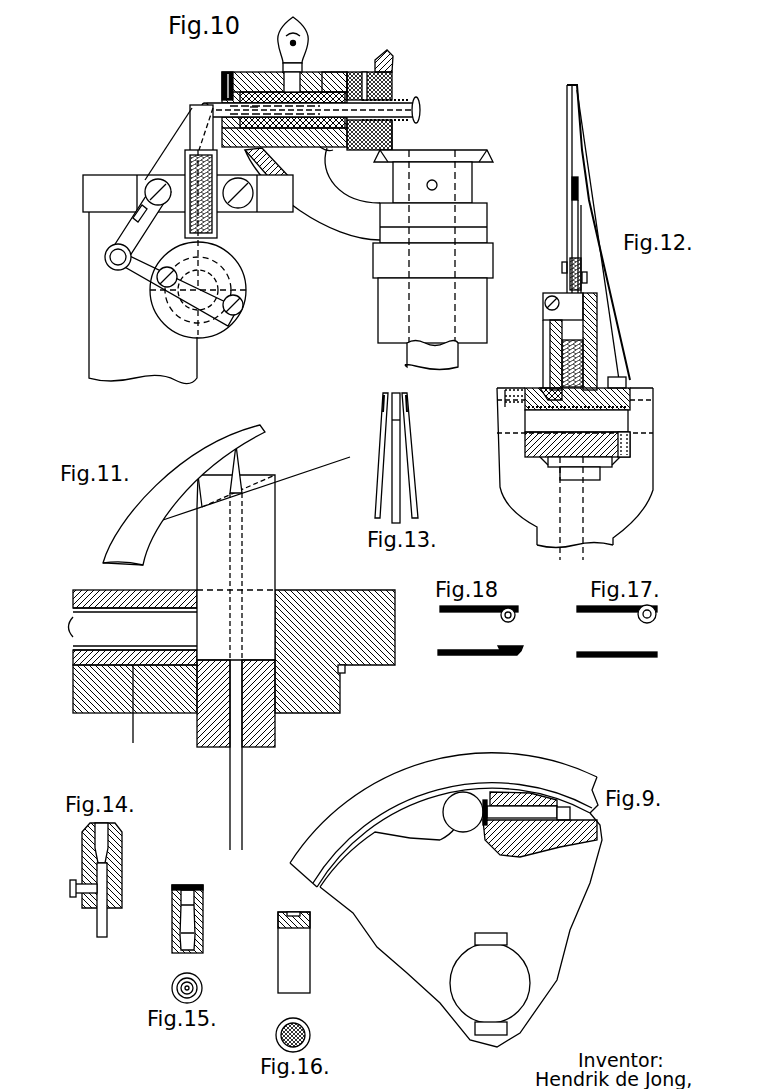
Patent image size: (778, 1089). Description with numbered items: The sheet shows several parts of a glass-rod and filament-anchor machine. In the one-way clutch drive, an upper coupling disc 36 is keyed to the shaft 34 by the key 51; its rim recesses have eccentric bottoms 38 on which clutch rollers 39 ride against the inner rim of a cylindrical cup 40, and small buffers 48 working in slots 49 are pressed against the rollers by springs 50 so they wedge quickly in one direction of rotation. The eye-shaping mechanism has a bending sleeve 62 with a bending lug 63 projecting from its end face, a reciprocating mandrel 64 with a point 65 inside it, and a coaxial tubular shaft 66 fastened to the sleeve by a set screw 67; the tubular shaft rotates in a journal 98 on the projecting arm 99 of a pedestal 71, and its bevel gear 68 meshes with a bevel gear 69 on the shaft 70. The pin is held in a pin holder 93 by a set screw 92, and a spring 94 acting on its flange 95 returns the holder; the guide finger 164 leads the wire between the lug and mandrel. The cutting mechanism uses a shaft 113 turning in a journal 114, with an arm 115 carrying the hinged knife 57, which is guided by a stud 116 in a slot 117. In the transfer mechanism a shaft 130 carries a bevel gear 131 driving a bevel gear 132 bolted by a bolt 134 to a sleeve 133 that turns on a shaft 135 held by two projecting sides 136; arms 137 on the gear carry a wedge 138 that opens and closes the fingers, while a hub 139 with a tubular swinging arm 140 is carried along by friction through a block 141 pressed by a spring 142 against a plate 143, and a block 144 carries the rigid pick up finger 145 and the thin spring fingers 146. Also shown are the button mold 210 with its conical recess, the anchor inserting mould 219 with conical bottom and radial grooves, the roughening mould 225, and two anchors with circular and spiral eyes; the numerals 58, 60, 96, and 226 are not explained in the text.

In FIG. 9, the shaft 34 is at (520, 995).
In FIG. 9, the upper coupling disc 36 is at (602, 845).
In FIG. 9, the eccentric bottoms 38 is at (427, 834).
In FIG. 9, the clutch rollers 39 is at (463, 822).
In FIG. 9, the cylindrical cup 40 is at (405, 808).
In FIG. 9, the buffers 48 is at (537, 818).
In FIG. 9, the slots 49 is at (568, 822).
In FIG. 9, the springs 50 is at (494, 855).
In FIG. 9, the key 51 is at (508, 939).
In FIG. 10, the knife 57 is at (189, 112).
In FIG. 10, the plate 58 is at (190, 135).
In FIG. 10, the screw 60 is at (242, 207).
In FIG. 10, the bending roll or sleeve 62 is at (250, 103).
In FIG. 11, the bending roll or sleeve 62 is at (270, 499).
In FIG. 10, the bending lug 63 is at (206, 103).
In FIG. 11, the bending lug 63 is at (250, 472).
In FIG. 10, the reciprocating pin or mandrel 64 is at (250, 108).
In FIG. 11, the reciprocating pin or mandrel 64 is at (243, 528).
In FIG. 11, the point 65 is at (245, 453).
In FIG. 10, the tubular shaft 66 is at (299, 84).
In FIG. 11, the tubular shaft 66 is at (301, 595).
In FIG. 10, the set screw 67 is at (229, 72).
In FIG. 11, the set screw 67 is at (158, 618).
In FIG. 10, the bevel gear 68 is at (392, 58).
In FIG. 10, the bevel gear 69 is at (480, 153).
In FIG. 10, the shaft 70 is at (458, 352).
In FIG. 10, the pedestal 71 is at (378, 305).
In FIG. 10, the set screw 92 is at (328, 148).
In FIG. 10, the pin holder 93 is at (396, 102).
In FIG. 10, the spring 94 is at (396, 123).
In FIG. 10, the flange 95 is at (419, 104).
In FIG. 10, the bushing 96 is at (367, 150).
In FIG. 10, the journal 98 is at (334, 75).
In FIG. 11, the journal 98 is at (350, 702).
In FIG. 10, the projecting arm 99 is at (329, 219).
In FIG. 10, the shaft 113 is at (217, 277).
In FIG. 10, the journal 114 is at (237, 263).
In FIG. 10, the arm 115 is at (148, 273).
In FIG. 10, the stud 116 is at (157, 186).
In FIG. 10, the slot 117 is at (125, 214).
In FIG. 12, the shaft 130 is at (585, 527).
In FIG. 12, the bevel gear 131 is at (540, 461).
In FIG. 12, the bevel gear 132 is at (652, 390).
In FIG. 12, the sleeve 133 is at (566, 410).
In FIG. 12, the bolt 134 is at (630, 445).
In FIG. 12, the shaft 135 is at (618, 422).
In FIG. 12, the projecting sides 136 is at (505, 400).
In FIG. 12, the arms 137 is at (622, 358).
In FIG. 12, the wedge 138 is at (579, 172).
In FIG. 12, the hub 139 is at (525, 444).
In FIG. 12, the tubular swinging arm 140 is at (596, 345).
In FIG. 12, the block 141 is at (550, 392).
In FIG. 12, the spring 142 is at (622, 374).
In FIG. 12, the plate 143 is at (550, 347).
In FIG. 12, the block 144 is at (565, 300).
In FIG. 12, the pick up finger 145 is at (567, 214).
In FIG. 13, the pick up finger 145 is at (400, 497).
In FIG. 12, the pick up fingers 146 is at (580, 236).
In FIG. 13, the pick up fingers 146 is at (380, 472).
In FIG. 10, the guide finger 164 is at (270, 160).
In FIG. 11, the guide finger 164 is at (200, 447).
In FIG. 14, the button mold 210 is at (123, 840).
In FIG. 15, the anchor inserting mould 219 is at (204, 892).
In FIG. 16, the mould 225 is at (305, 960).
In FIG. 11, the guide line 226 is at (256, 480).